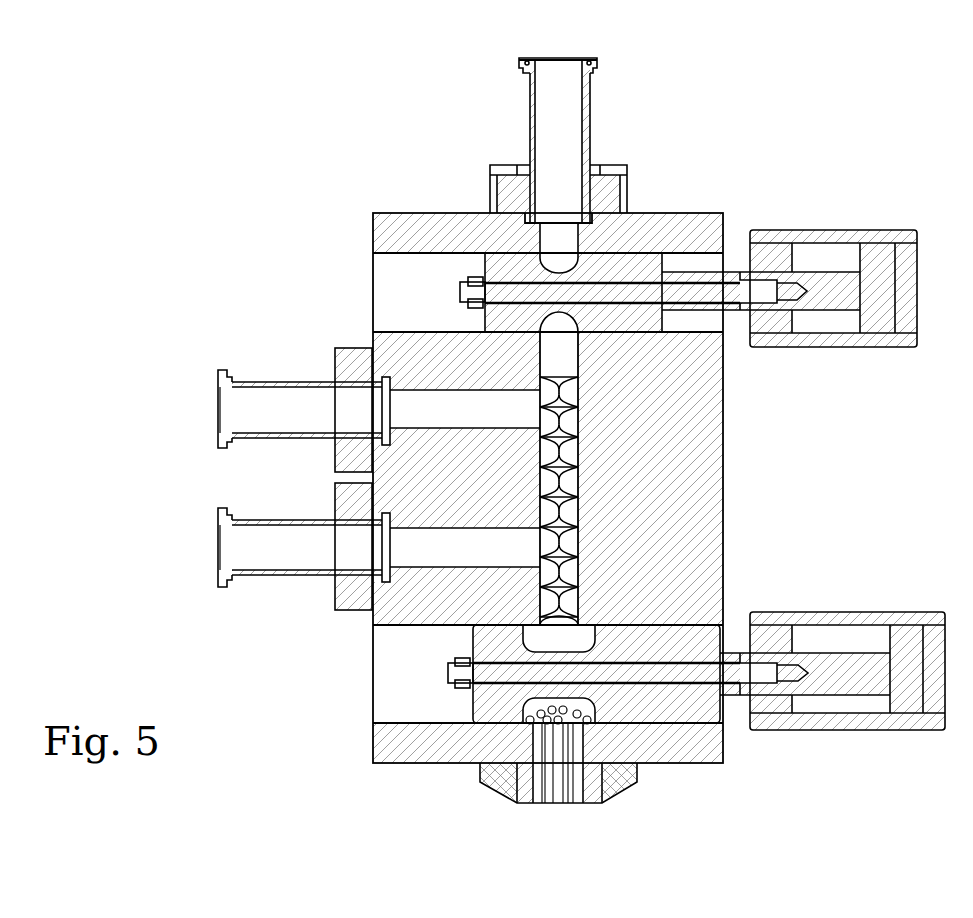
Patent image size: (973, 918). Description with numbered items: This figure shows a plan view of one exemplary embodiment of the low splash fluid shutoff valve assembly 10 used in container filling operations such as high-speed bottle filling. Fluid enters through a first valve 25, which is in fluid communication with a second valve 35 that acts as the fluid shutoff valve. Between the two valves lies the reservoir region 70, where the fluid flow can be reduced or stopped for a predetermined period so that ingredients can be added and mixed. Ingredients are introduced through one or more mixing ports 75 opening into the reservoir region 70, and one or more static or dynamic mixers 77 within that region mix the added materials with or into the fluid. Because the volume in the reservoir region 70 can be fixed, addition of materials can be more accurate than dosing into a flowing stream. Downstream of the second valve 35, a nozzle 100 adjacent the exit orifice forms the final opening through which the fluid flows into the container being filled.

The low splash fluid shutoff valve assembly 10 is at (727, 163).
The first valve 25 is at (456, 281).
The second valve 35 is at (456, 708).
The reservoir region 70 is at (565, 353).
The mixing port 75 is at (540, 410).
The static or dynamic mixer 77 is at (563, 456).
The nozzle 100 is at (590, 792).